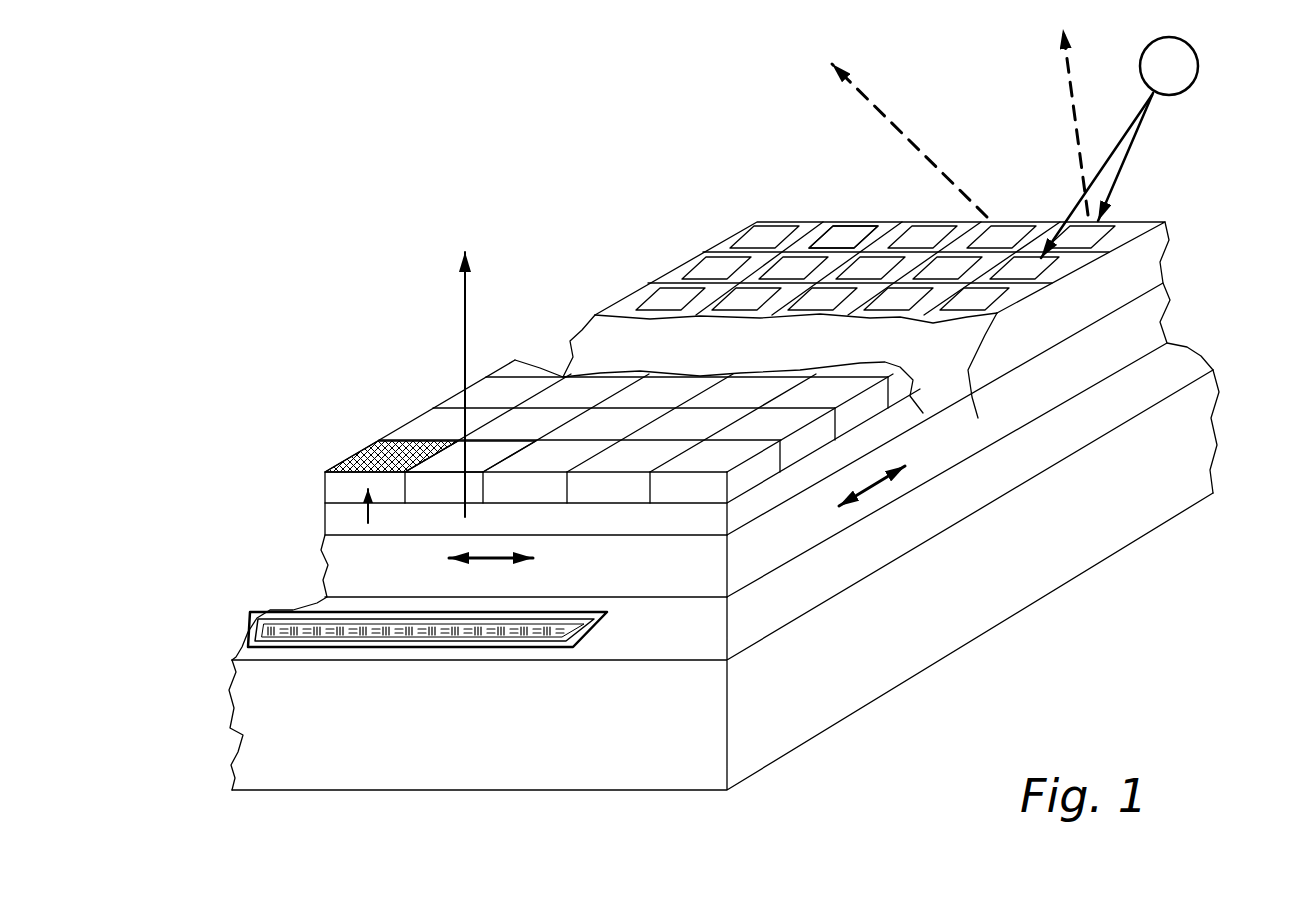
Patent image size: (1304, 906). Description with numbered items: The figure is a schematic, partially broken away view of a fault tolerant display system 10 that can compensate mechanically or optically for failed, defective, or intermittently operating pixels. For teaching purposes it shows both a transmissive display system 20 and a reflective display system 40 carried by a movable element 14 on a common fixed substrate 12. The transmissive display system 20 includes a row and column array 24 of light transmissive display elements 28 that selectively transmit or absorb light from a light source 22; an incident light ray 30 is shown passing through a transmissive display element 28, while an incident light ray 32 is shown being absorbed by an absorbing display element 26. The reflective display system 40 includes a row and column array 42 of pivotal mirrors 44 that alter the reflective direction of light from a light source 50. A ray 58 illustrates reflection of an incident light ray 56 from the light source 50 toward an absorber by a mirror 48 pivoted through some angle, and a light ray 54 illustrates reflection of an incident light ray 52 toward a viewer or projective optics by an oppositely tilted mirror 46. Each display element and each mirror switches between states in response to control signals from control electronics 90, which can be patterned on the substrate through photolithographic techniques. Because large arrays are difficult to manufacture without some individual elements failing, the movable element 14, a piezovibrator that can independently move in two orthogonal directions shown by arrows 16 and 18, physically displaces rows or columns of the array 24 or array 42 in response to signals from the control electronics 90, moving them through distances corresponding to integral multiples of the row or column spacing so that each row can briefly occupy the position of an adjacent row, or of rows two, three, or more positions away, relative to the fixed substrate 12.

The fault tolerant display system 10 is at (396, 178).
The fixed substrate 12 is at (1088, 543).
The movable element 14 is at (1173, 315).
The arrow 16 is at (882, 480).
The arrow 18 is at (492, 560).
The transmissive display system 20 is at (380, 328).
The light source 22 is at (327, 513).
The row and column array 24 is at (420, 422).
The absorbing display element 26 is at (370, 450).
The transmissive display element 28 is at (478, 452).
The incident light ray 30 is at (462, 323).
The incident light ray 32 is at (372, 510).
The reflective display system 40 is at (620, 220).
The row and column array 42 is at (747, 220).
The pivotal mirror 44 is at (847, 233).
The mirror 46 is at (1117, 233).
The mirror 48 is at (1087, 272).
The light source 50 is at (1184, 81).
The incident light ray 52 is at (1147, 140).
The light ray 54 is at (1067, 83).
The incident light ray 56 is at (1120, 137).
The ray 58 is at (953, 180).
The control electronics 90 is at (258, 620).